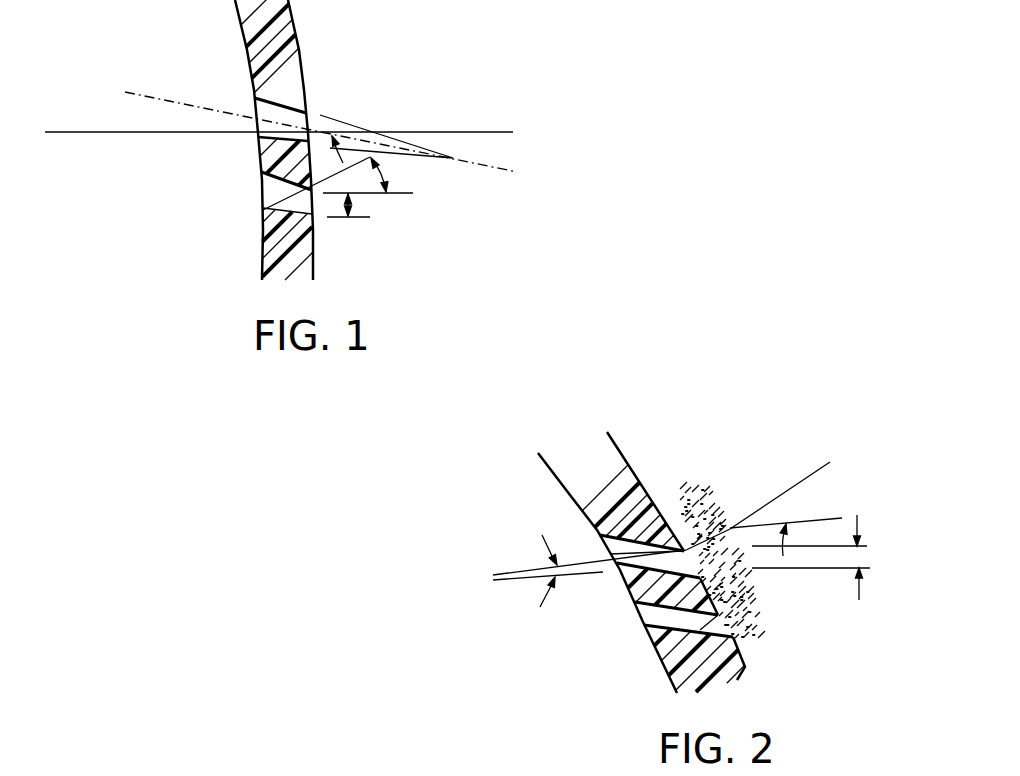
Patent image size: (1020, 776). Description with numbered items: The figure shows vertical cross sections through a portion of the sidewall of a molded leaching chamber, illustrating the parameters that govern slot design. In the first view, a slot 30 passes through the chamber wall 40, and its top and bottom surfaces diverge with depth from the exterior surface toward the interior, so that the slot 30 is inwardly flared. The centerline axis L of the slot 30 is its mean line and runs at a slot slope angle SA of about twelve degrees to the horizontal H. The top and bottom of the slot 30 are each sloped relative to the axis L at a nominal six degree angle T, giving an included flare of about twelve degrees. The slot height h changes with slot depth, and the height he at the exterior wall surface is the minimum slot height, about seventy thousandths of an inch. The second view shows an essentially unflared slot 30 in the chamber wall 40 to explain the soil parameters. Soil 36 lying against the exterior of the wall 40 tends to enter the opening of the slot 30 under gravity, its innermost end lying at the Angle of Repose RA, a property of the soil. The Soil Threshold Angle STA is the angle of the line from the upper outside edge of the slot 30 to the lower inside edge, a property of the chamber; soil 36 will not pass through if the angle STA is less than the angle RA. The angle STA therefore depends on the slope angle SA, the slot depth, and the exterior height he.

In FIG. 1, the slot 30 is at (258, 201).
In FIG. 2, the slot 30 is at (652, 617).
In FIG. 1, the chamber wall 40 is at (292, 18).
In FIG. 2, the chamber wall 40 is at (747, 668).
In FIG. 2, the soil 36 is at (757, 593).
In FIG. 1, the horizontal H is at (90, 131).
In FIG. 1, the centerline axis L is at (197, 73).
In FIG. 1, the slot slope angle SA is at (185, 134).
In FIG. 1, the taper angle T is at (328, 117).
In FIG. 1, the Soil Threshold Angle STA is at (349, 183).
In FIG. 2, the Soil Threshold Angle STA is at (588, 587).
In FIG. 1, the slot height h is at (353, 218).
In FIG. 2, the Angle of Repose RA is at (777, 496).
In FIG. 2, the slot height at exterior he is at (816, 570).